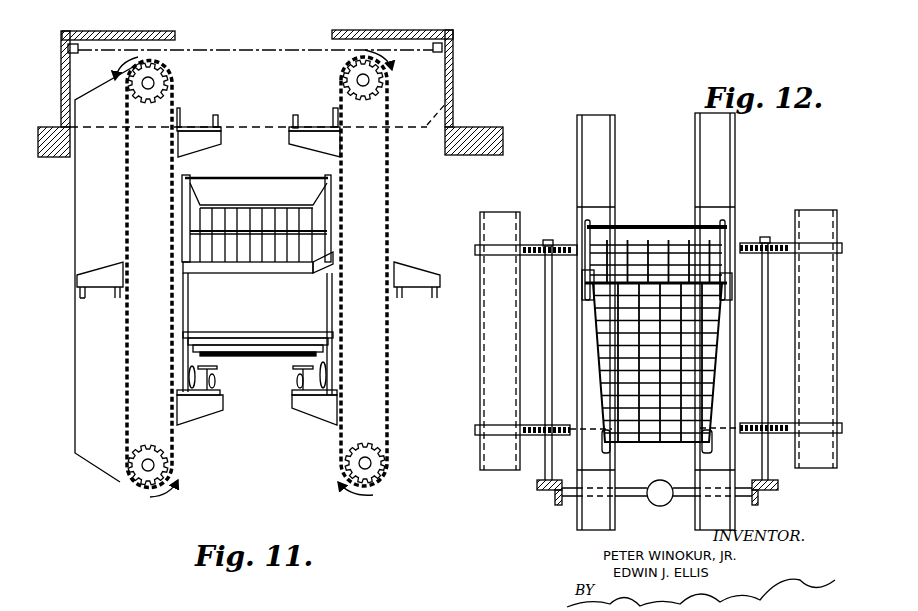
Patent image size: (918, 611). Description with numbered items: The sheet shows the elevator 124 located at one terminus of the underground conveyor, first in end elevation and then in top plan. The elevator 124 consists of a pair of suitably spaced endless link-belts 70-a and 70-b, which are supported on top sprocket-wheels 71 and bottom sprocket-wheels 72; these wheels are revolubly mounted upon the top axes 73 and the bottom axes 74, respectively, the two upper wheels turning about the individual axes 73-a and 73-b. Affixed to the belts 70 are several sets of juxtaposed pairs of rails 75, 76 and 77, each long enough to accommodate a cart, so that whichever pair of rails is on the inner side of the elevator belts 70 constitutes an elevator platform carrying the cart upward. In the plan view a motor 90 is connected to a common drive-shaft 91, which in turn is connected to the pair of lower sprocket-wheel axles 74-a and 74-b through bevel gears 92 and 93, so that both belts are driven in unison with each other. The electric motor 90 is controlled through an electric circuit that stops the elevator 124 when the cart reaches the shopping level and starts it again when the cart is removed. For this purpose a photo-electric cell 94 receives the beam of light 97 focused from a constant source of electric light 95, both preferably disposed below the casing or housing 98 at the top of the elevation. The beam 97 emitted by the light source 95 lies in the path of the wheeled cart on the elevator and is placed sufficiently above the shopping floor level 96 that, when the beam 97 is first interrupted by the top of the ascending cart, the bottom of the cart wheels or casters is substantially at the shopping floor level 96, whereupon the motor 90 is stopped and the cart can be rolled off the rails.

In FIG. 11, the photo-electric cell 94 is at (68, 50).
In FIG. 11, the casing or housing 98 is at (138, 32).
In FIG. 11, the beam of light 97 is at (257, 48).
In FIG. 11, the source of electric light 95 is at (440, 51).
In FIG. 11, the shopping floor level 96 is at (473, 126).
In FIG. 11, the elevator 124 is at (73, 265).
In FIG. 11, the top sprocket-wheel axis 73-a is at (150, 82).
In FIG. 11, the top sprocket-wheel axis 73-b is at (361, 79).
In FIG. 11, the rails 77 is at (197, 127).
In FIG. 11, the top rollers or sprocket-wheels 71 is at (375, 90).
In FIG. 11, the rails 76 is at (110, 298).
In FIG. 11, the endless-web belt or link-belt 70-a is at (172, 362).
In FIG. 11, the endless-web belt or link-belt 70-b is at (343, 347).
In FIG. 11, the rails 75 is at (292, 392).
In FIG. 11, the belts 70 is at (340, 427).
In FIG. 11, the lower sprocket-wheel axle 74-a is at (150, 465).
In FIG. 12, the lower sprocket-wheel axle 74-a is at (547, 430).
In FIG. 11, the lower sprocket-wheel axle 74-b is at (363, 463).
In FIG. 12, the lower sprocket-wheel axle 74-b is at (760, 457).
In FIG. 11, the axes of bottom sprocket-wheels 74 is at (143, 485).
In FIG. 11, the bottom rollers or sprocket-wheels 72 is at (375, 475).
In FIG. 12, the axes of top sprocket-wheels 73 is at (545, 320).
In FIG. 12, the bevel gears 93 is at (537, 485).
In FIG. 12, the bevel gears 92 is at (558, 505).
In FIG. 12, the common drive-shaft 91 is at (637, 497).
In FIG. 12, the motor 90 is at (663, 507).